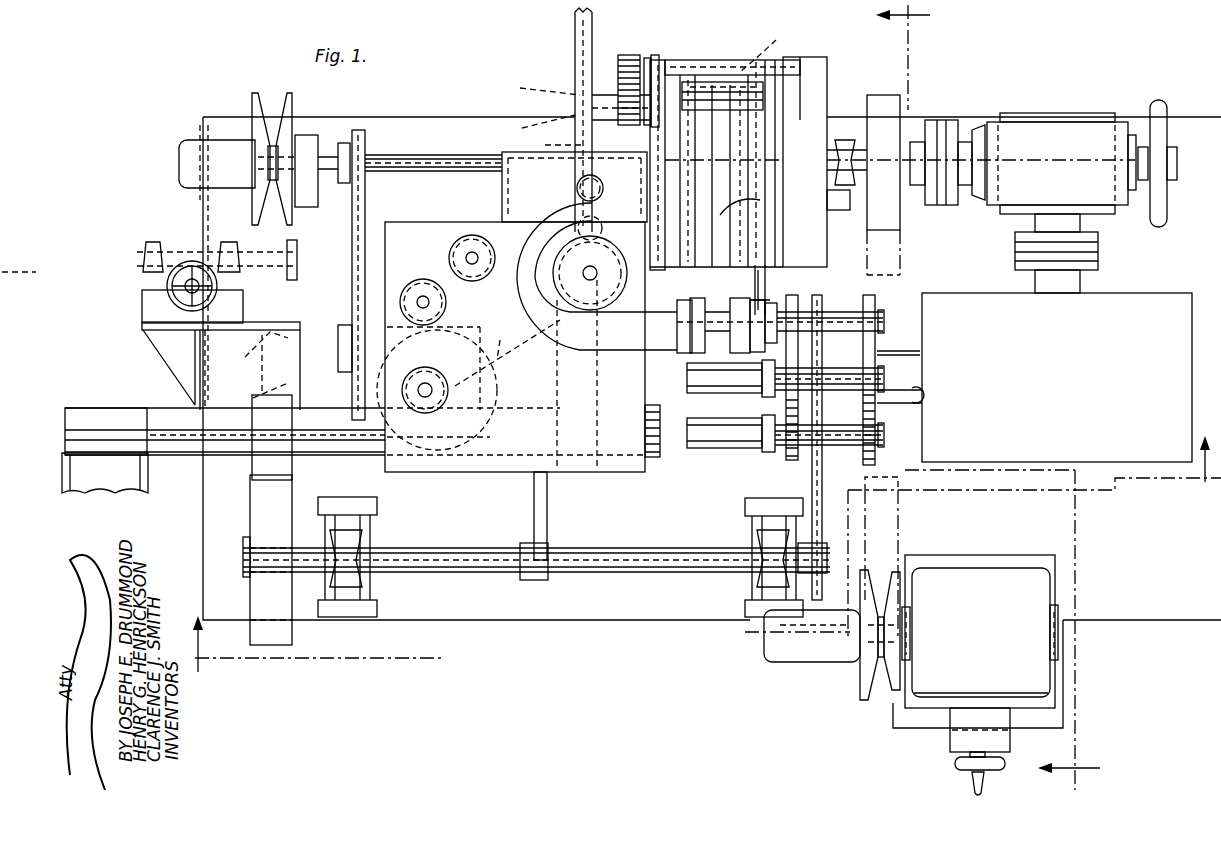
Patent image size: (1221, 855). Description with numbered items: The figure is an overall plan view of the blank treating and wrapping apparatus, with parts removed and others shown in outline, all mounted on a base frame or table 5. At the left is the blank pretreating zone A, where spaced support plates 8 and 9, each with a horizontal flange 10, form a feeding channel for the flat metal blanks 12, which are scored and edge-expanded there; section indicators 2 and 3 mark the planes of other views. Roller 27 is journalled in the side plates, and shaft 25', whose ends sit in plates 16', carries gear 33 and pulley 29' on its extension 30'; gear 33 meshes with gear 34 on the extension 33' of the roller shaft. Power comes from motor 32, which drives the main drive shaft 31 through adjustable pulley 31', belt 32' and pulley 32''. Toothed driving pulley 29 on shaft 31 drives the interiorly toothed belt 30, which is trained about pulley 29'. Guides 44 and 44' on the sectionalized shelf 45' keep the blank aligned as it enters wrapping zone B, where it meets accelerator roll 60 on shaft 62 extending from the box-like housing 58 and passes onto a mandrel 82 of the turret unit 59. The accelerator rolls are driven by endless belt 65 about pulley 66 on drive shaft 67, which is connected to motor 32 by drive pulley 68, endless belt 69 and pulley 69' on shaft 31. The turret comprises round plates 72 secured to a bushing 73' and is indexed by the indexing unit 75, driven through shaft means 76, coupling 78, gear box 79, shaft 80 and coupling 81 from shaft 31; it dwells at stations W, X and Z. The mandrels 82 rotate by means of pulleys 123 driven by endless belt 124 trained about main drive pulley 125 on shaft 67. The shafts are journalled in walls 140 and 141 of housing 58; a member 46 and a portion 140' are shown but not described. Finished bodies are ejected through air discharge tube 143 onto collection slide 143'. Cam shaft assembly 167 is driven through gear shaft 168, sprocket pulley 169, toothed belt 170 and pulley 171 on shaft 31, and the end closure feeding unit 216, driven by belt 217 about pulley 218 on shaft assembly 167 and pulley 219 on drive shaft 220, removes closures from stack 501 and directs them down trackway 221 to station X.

The base frame or table 5 is at (600, 612).
The support plate 8 is at (782, 232).
The support plate 9 is at (660, 137).
The horizontal flange 10 is at (605, 70).
The flat metal blank 12 is at (762, 256).
The plate 16' is at (736, 73).
The shaft 25' is at (722, 64).
The roller shaft 27 is at (766, 45).
The toothed driving pulley 29 is at (551, 146).
The drive pulley 29' is at (534, 127).
The interiorly toothed belt 30 is at (553, 120).
The shaft extension 30' is at (534, 90).
The main drive shaft 31 is at (433, 149).
The adjustable pulley 31' is at (850, 647).
The motor 32 is at (980, 675).
The belt 32' is at (905, 435).
The pulley 32'' is at (888, 149).
The gear 33 is at (579, 83).
The shaft extension 33' is at (652, 66).
The gear 34 is at (625, 55).
The guide 44 is at (892, 162).
The guide 44' is at (645, 208).
The sectionalized shelf 45' is at (767, 203).
The coupling 46 is at (780, 325).
The box-like housing 58 is at (636, 481).
The turret unit 59 is at (736, 452).
The accelerator roll 60 is at (770, 292).
The shaft 62 is at (672, 288).
The endless belt 65 is at (548, 520).
The pulley 66 is at (548, 542).
The drive shaft 67 is at (437, 553).
The drive pulley 68 is at (292, 630).
The endless belt 69 is at (252, 412).
The pulley 69' is at (264, 142).
The round plate or disc 72 is at (793, 452).
The bushing 73' is at (920, 381).
The turret precision indexing unit 75 is at (1080, 400).
The shaft means 76 is at (1032, 216).
The coupling 78 is at (1098, 250).
The gear box 79 is at (1066, 180).
The shaft 80 is at (976, 140).
The coupling 81 is at (942, 122).
The mandrel 82 is at (731, 406).
The pulley 123 is at (822, 332).
The endless belt 124 is at (814, 480).
The main drive pulley 125 is at (815, 538).
The wall 140 is at (586, 362).
The carriage slide 140' is at (487, 305).
The wall 141 is at (640, 380).
The air discharge tube 143 is at (341, 434).
The collection slide 143' is at (127, 473).
The cam shaft assembly 167 is at (430, 393).
The gear shaft 168 is at (340, 336).
The sprocket type drive pulley 169 is at (360, 385).
The interiorly toothed belt 170 is at (357, 265).
The sprocket type driving pulley 171 is at (366, 140).
The end closure feeding unit 216 is at (524, 226).
The interiorly toothed belt 217 is at (507, 353).
The pulley 218 is at (437, 342).
The pulley 219 is at (598, 285).
The feeder drive shaft 220 is at (598, 268).
The trackway 221 is at (658, 332).
The end closure stack 501 is at (576, 190).
The section line 2 is at (707, 574).
The section line 3 is at (1020, 399).
The blank pretreating zone A is at (824, 60).
The wrapping zone B is at (846, 300).
The station X is at (902, 331).
The station W is at (903, 381).
The station Z is at (901, 444).